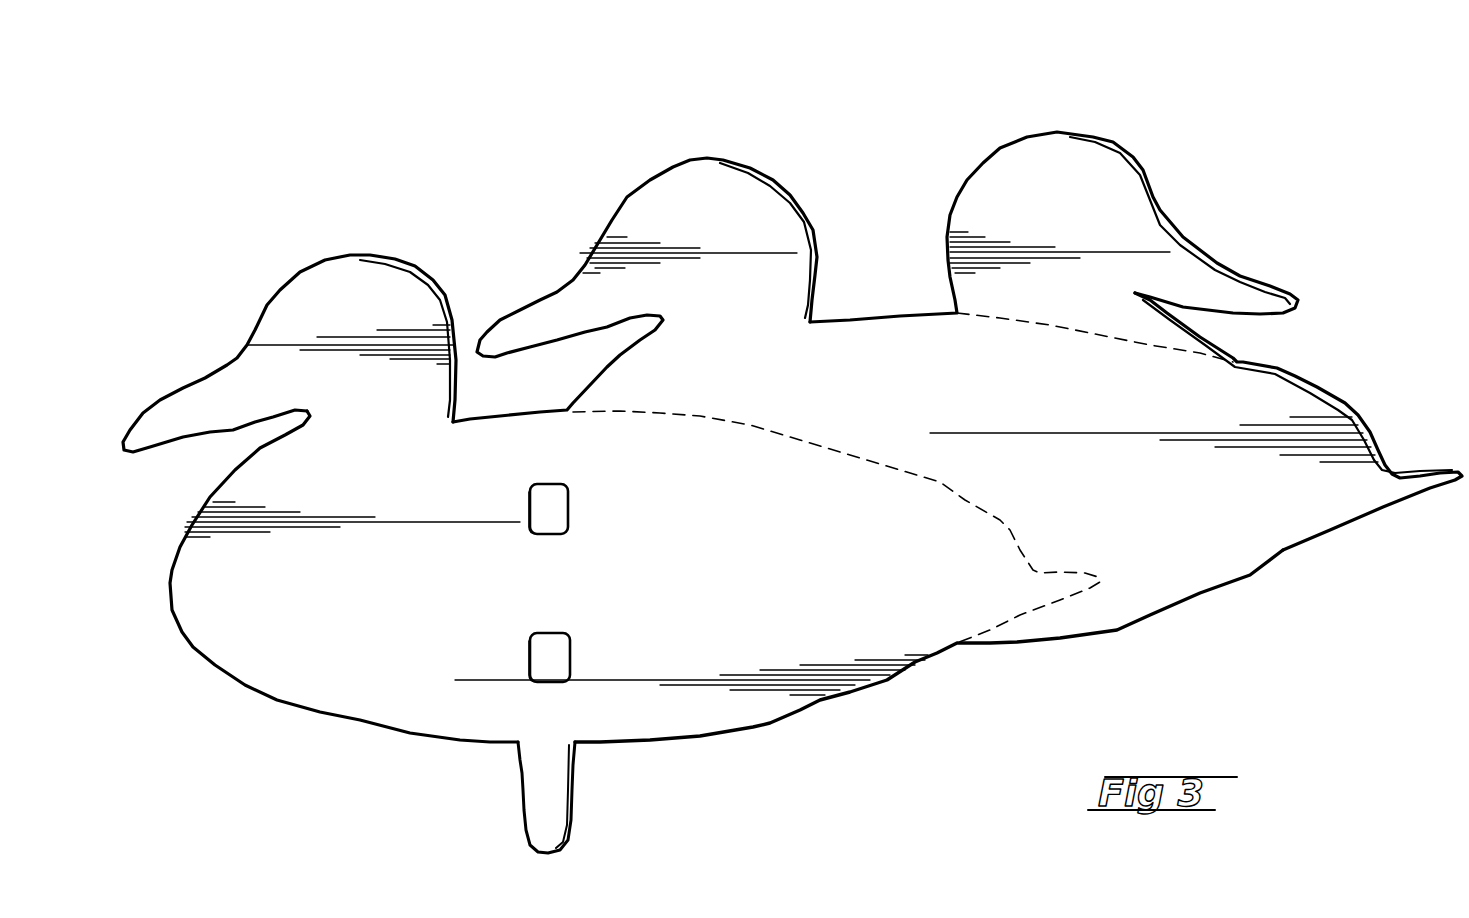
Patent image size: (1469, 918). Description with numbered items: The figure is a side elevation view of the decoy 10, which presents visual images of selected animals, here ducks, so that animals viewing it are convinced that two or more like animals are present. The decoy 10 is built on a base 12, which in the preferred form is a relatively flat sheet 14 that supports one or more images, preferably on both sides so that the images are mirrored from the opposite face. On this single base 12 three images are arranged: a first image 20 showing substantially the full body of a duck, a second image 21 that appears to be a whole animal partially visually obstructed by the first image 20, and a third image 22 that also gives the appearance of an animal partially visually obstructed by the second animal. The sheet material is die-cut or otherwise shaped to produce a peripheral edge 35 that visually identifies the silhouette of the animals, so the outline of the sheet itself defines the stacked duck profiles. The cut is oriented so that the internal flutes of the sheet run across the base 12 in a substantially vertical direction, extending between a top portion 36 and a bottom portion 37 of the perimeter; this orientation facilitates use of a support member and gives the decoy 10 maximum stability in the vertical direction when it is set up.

The decoy 10 is at (873, 128).
The base 12 is at (1340, 388).
The flat sheet 14 is at (1120, 630).
The first image 20 is at (303, 667).
The second image 21 is at (848, 353).
The third image 22 is at (1105, 183).
The peripheral edge 35 is at (1275, 365).
The top portion 36 is at (493, 410).
The bottom portion 37 is at (627, 743).